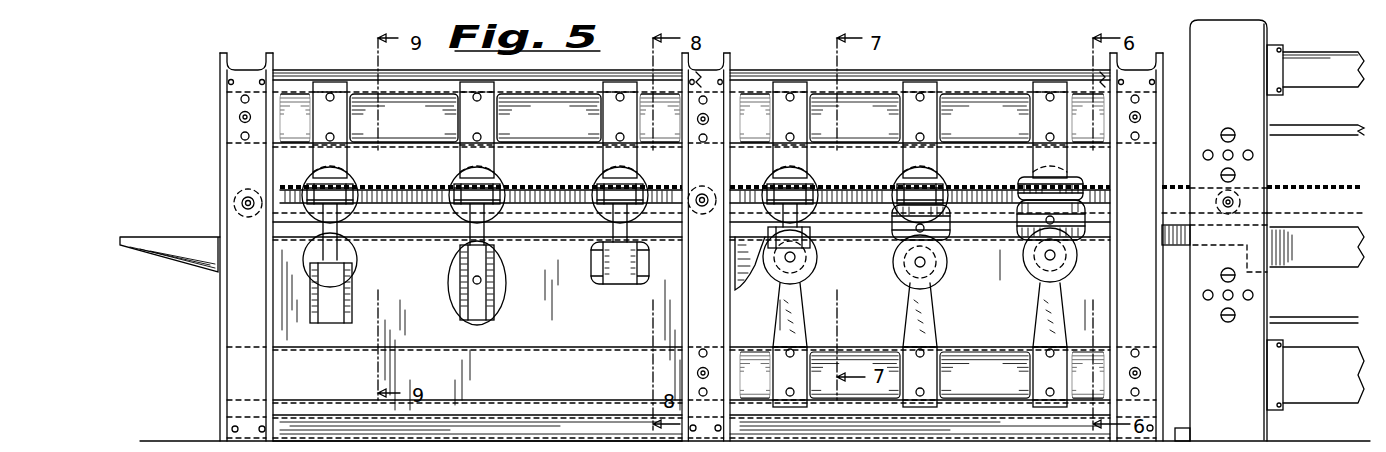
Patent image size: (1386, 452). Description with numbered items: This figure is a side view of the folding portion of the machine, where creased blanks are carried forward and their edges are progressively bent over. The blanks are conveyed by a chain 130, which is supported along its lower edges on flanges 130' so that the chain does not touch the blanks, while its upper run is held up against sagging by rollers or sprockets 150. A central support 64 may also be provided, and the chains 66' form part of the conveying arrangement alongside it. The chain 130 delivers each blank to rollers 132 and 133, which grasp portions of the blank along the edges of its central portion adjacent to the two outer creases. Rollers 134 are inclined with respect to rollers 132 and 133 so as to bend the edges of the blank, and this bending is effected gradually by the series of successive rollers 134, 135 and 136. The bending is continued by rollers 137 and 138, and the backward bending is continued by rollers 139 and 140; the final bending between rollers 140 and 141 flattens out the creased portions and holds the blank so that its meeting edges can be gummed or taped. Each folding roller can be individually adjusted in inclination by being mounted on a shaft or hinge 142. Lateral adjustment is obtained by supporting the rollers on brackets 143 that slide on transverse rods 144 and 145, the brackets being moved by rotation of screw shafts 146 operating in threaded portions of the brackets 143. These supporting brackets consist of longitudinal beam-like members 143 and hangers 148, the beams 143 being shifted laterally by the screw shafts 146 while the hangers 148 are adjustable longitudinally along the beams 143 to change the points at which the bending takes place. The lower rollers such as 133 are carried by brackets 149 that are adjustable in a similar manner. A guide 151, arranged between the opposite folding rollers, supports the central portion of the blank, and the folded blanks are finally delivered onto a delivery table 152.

The central support 64 is at (1184, 245).
The transverse beams 66' is at (1315, 227).
The chain 130 is at (821, 185).
The flanges 130' is at (691, 240).
The roller 132 is at (900, 178).
The roller 133 is at (775, 272).
The roller 134 is at (1082, 231).
The roller 135 is at (947, 240).
The roller 136 is at (812, 235).
The roller 137 is at (651, 272).
The roller 138 is at (598, 183).
The roller 139 is at (503, 302).
The roller 140 is at (355, 255).
The roller 141 is at (305, 180).
The shaft or hinge 142 is at (797, 196).
The bracket 143 is at (368, 106).
The transverse rod 144 is at (240, 99).
The transverse rod 145 is at (239, 137).
The screw shaft 146 is at (238, 117).
The hanger 148 is at (470, 117).
The bracket 149 is at (1045, 322).
The roller or sprocket 150 is at (751, 224).
The guide 151 is at (290, 345).
The delivery table 152 is at (162, 237).